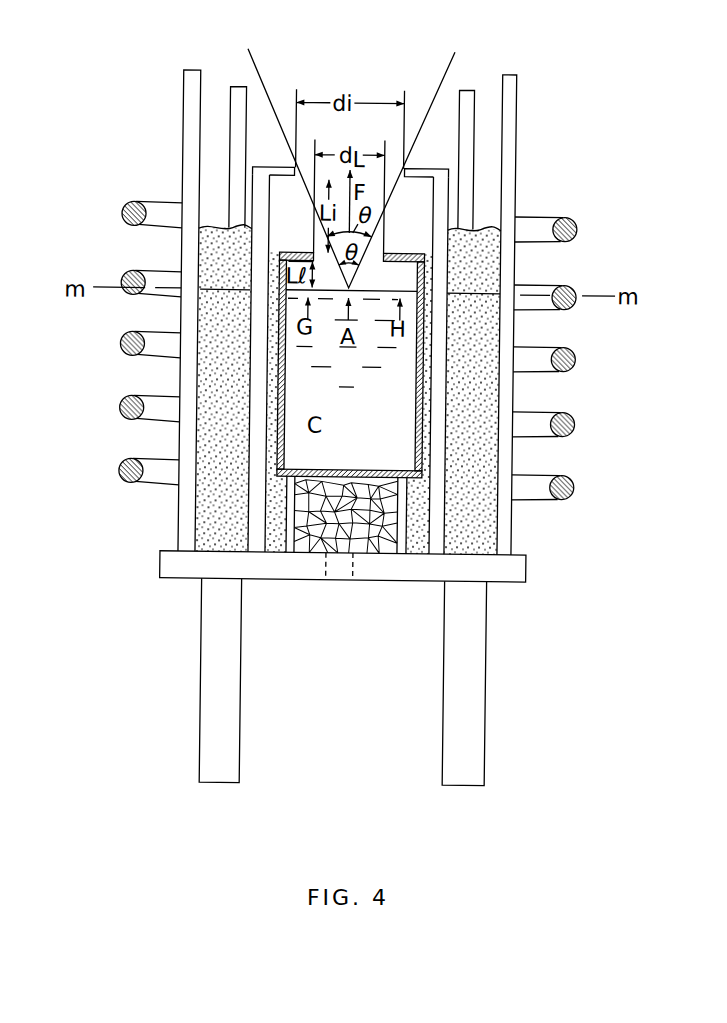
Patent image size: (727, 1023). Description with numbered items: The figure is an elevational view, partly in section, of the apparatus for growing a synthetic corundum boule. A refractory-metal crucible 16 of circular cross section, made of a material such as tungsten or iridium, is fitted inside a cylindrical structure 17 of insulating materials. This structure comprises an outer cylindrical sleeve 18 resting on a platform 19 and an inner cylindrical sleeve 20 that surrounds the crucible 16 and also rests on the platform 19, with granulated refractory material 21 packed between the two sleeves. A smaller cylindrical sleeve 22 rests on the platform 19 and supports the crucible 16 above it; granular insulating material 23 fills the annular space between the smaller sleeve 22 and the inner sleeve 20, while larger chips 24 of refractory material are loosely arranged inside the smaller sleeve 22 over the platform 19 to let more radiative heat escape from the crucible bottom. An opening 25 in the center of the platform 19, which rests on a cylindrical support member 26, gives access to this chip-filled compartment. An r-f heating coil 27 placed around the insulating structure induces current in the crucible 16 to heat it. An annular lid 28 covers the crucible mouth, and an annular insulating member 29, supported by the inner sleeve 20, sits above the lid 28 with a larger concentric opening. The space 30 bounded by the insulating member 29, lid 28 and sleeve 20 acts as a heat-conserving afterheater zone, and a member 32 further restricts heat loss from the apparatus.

The crucible 16 is at (283, 403).
The cylindrical structure 17 is at (517, 105).
The outer cylindrical sleeve 18 is at (508, 328).
The platform 19 is at (520, 567).
The inner cylindrical sleeve 20 is at (441, 389).
The granulated refractory material 21 is at (494, 451).
The smaller cylindrical sleeve 22 is at (405, 551).
The granular insulating material 23 is at (276, 551).
The chips of refractory material 24 is at (321, 540).
The opening 25 is at (355, 563).
The cylindrical support member 26 is at (479, 658).
The r-f heating coil 27 is at (121, 473).
The annular lid 28 is at (412, 254).
The annular insulating member 29 is at (434, 207).
The space 30 is at (396, 223).
The member 32 is at (238, 90).